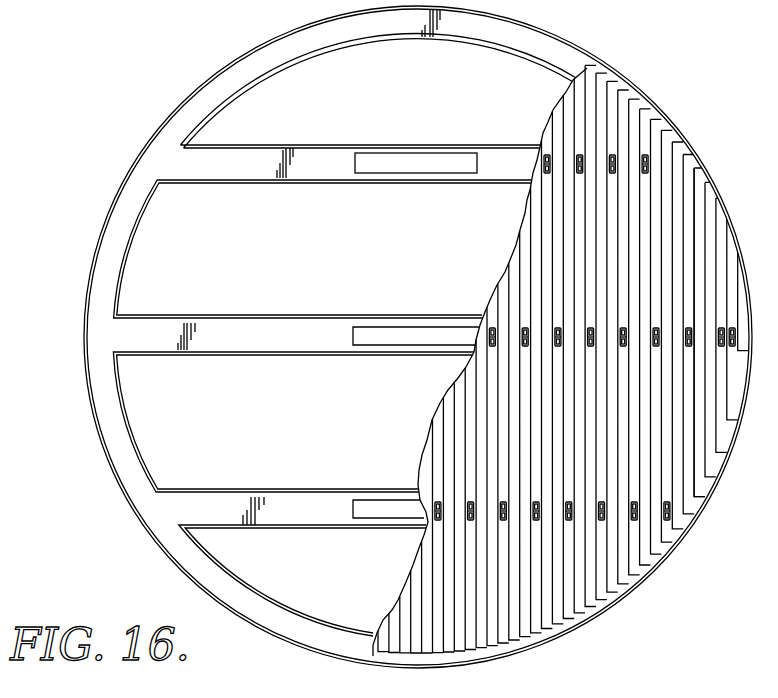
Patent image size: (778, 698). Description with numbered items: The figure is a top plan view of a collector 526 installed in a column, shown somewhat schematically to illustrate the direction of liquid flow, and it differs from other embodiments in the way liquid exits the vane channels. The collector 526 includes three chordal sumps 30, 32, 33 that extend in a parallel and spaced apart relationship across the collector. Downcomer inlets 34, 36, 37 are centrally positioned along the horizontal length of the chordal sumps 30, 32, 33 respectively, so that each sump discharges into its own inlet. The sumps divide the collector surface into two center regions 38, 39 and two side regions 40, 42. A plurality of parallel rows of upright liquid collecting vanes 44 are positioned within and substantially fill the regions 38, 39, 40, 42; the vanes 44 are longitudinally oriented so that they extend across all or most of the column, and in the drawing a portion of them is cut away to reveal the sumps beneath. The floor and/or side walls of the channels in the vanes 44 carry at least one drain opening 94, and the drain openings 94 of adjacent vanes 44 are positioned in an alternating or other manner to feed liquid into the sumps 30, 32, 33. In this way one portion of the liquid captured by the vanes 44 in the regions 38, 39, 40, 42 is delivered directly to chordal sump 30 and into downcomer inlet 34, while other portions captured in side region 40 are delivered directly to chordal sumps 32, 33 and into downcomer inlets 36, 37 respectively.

The side region 40 is at (506, 64).
The collector 526 is at (620, 80).
The downcomer inlet 34 is at (396, 158).
The center region 38 is at (160, 231).
The chordal sump 30 is at (238, 179).
The chordal sump 32 is at (238, 326).
The downcomer inlet 36 is at (390, 344).
The center region 39 is at (158, 434).
The chordal sump 33 is at (307, 500).
The downcomer inlet 37 is at (372, 502).
The liquid collecting vane 44 is at (688, 459).
The drain opening 94 is at (640, 514).
The side region 42 is at (297, 588).